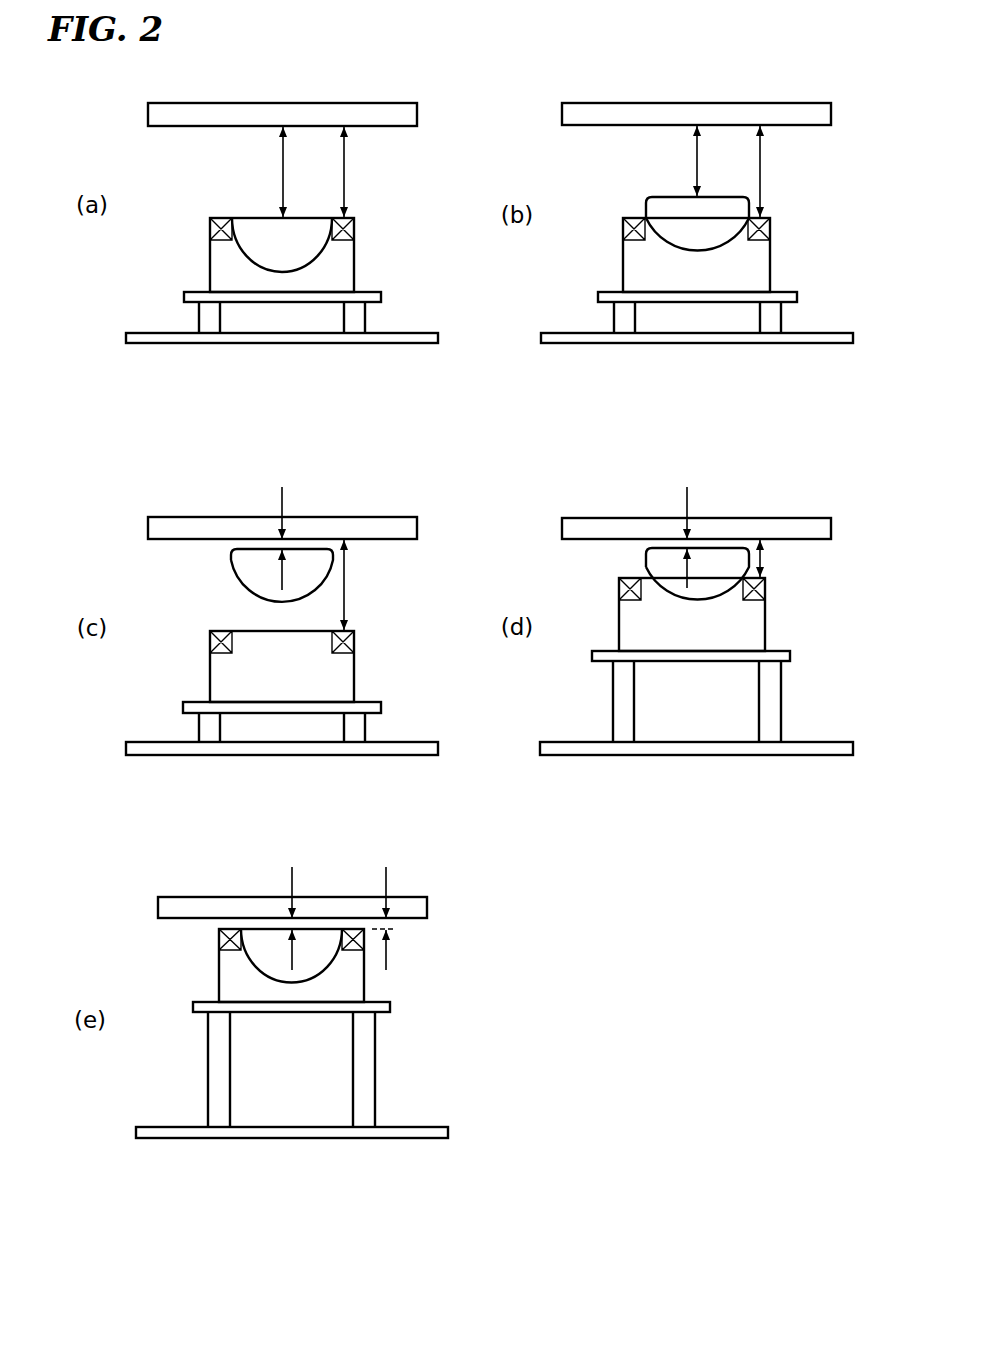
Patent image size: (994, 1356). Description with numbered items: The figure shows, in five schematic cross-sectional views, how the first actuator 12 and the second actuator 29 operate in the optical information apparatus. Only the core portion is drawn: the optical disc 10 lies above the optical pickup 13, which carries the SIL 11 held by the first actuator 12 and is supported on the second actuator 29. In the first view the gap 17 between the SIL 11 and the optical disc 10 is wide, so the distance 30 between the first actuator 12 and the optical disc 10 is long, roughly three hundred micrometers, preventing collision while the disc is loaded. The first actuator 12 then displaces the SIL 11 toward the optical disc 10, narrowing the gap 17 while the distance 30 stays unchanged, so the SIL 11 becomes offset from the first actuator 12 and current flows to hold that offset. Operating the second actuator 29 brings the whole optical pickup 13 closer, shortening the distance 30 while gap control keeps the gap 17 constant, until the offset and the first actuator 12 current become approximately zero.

The optical disc 10 is at (494, 484).
The SIL 11 is at (494, 595).
The first actuator 12 is at (444, 570).
The optical pickup 13 is at (439, 610).
The gap 17 is at (445, 548).
The second actuator 29 is at (476, 715).
The distance 30 is at (579, 548).